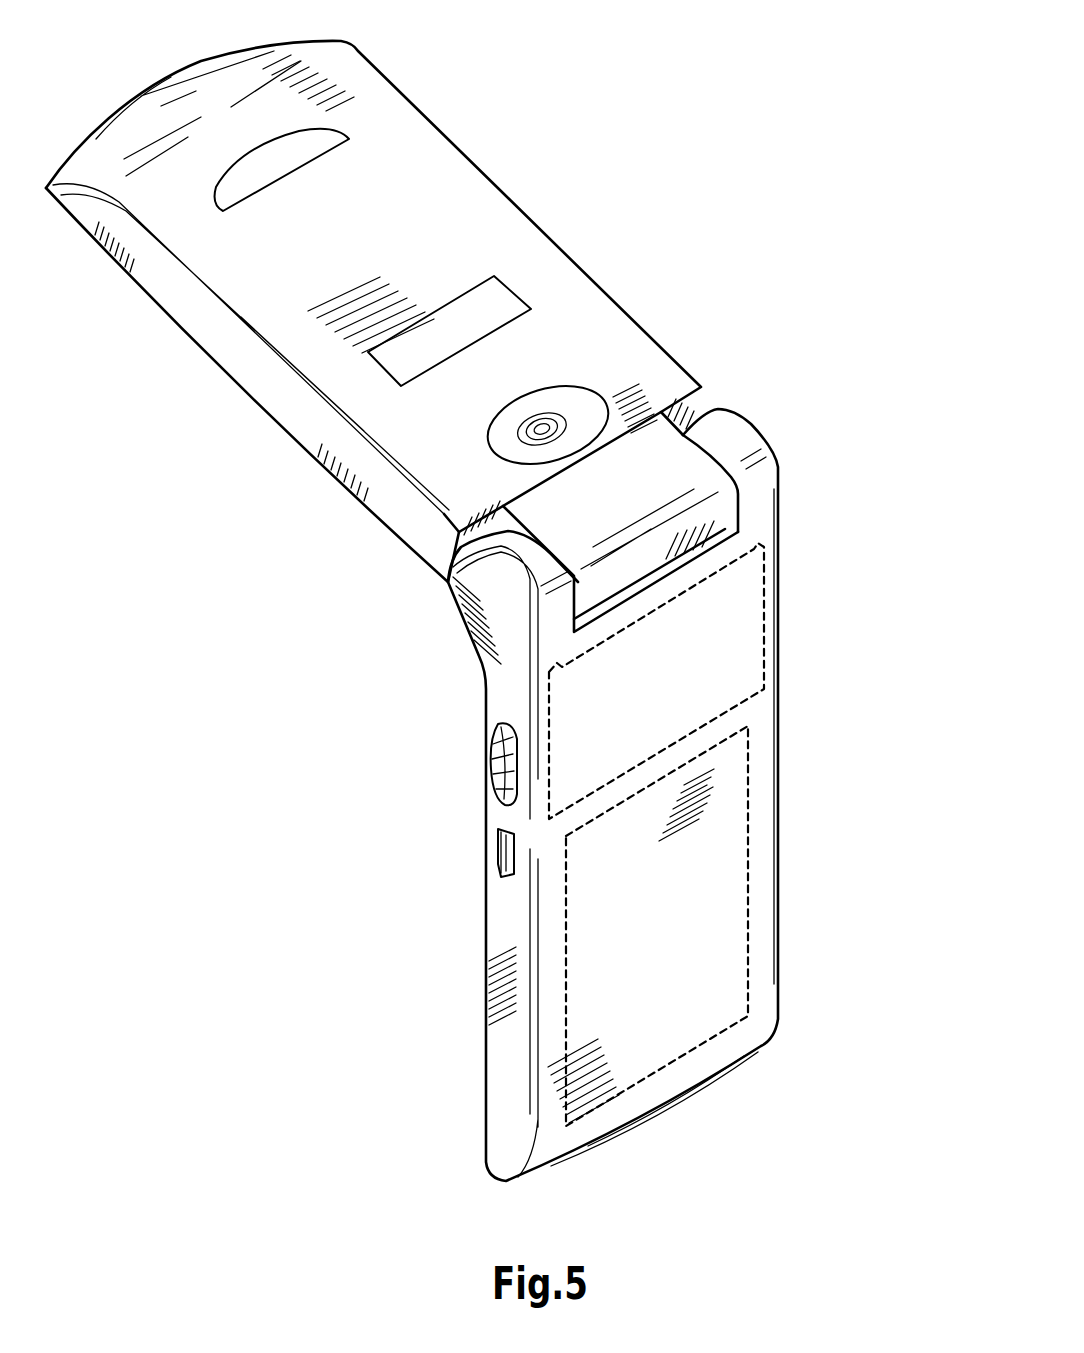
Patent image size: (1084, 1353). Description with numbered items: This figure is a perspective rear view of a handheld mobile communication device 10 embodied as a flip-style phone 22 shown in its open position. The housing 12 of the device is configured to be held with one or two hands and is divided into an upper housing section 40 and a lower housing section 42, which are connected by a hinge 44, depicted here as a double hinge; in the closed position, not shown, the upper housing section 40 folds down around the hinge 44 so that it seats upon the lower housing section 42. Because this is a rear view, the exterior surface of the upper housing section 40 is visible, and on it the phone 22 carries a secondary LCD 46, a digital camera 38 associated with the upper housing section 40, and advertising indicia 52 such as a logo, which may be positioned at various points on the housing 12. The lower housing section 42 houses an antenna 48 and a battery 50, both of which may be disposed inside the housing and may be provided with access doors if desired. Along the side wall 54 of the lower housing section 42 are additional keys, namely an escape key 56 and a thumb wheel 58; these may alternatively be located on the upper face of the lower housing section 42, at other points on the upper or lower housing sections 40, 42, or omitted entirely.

The mobile communication device 10 is at (812, 80).
The housing 12 is at (790, 435).
The flip-style phone 22 is at (688, 238).
The digital camera 38 is at (587, 403).
The upper housing section 40 is at (442, 127).
The lower housing section 42 is at (778, 747).
The hinge 44 is at (737, 450).
The secondary LCD 46 is at (496, 300).
The antenna 48 is at (733, 640).
The battery 50 is at (718, 900).
The advertising indicia 52 is at (318, 136).
The side wall 54 is at (500, 818).
The escape key 56 is at (497, 867).
The thumb wheel 58 is at (492, 763).